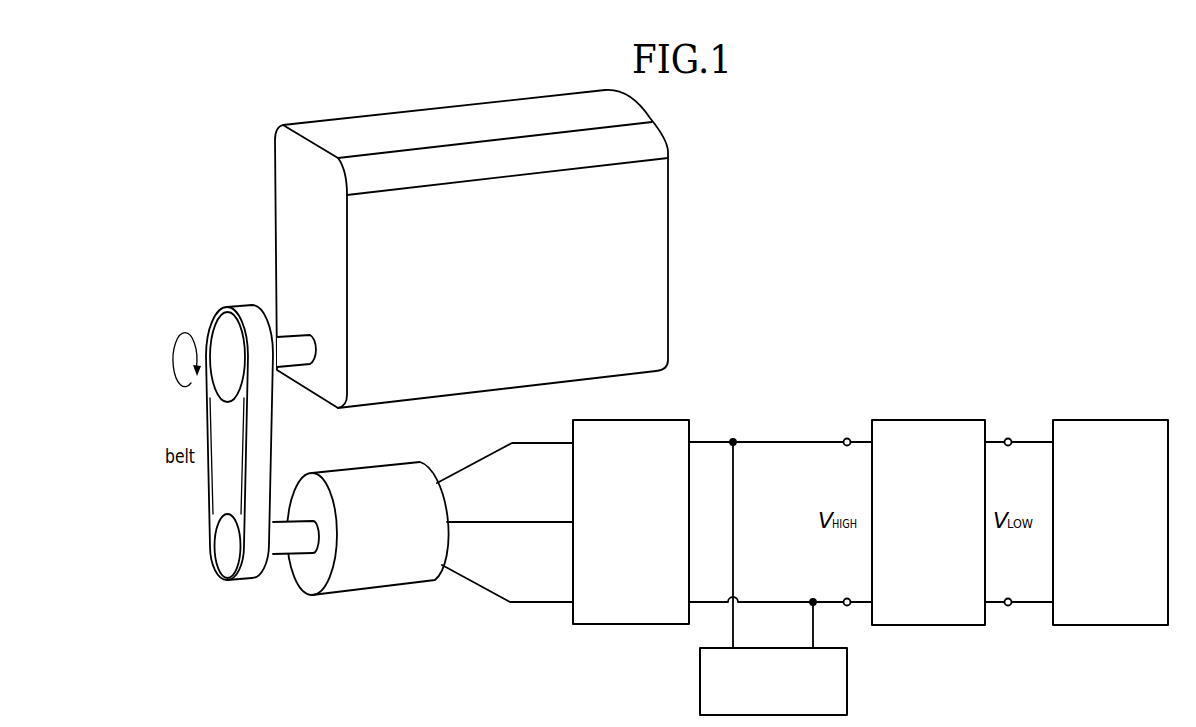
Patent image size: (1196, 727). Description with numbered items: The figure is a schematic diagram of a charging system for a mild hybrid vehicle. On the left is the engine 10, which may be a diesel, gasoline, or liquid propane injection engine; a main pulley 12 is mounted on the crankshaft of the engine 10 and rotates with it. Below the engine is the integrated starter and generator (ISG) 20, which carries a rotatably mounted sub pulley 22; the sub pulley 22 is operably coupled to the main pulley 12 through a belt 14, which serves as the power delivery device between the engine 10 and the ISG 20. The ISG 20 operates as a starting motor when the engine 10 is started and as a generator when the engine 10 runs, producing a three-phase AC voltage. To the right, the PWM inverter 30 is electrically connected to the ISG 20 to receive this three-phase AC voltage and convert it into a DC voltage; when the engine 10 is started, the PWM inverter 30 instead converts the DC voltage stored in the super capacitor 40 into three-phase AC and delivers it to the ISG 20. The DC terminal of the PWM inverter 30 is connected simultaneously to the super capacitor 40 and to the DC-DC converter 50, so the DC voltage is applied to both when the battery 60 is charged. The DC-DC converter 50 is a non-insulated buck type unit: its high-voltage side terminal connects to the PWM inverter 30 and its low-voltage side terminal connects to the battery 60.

The engine 10 is at (660, 213).
The main pulley 12 is at (220, 333).
The belt 14 is at (260, 437).
The integrated starter and generator (ISG) 20 is at (418, 570).
The sub pulley 22 is at (225, 538).
The PWM inverter 30 is at (631, 626).
The super capacitor 40 is at (849, 684).
The DC-DC converter 50 is at (929, 420).
The battery 60 is at (1112, 420).